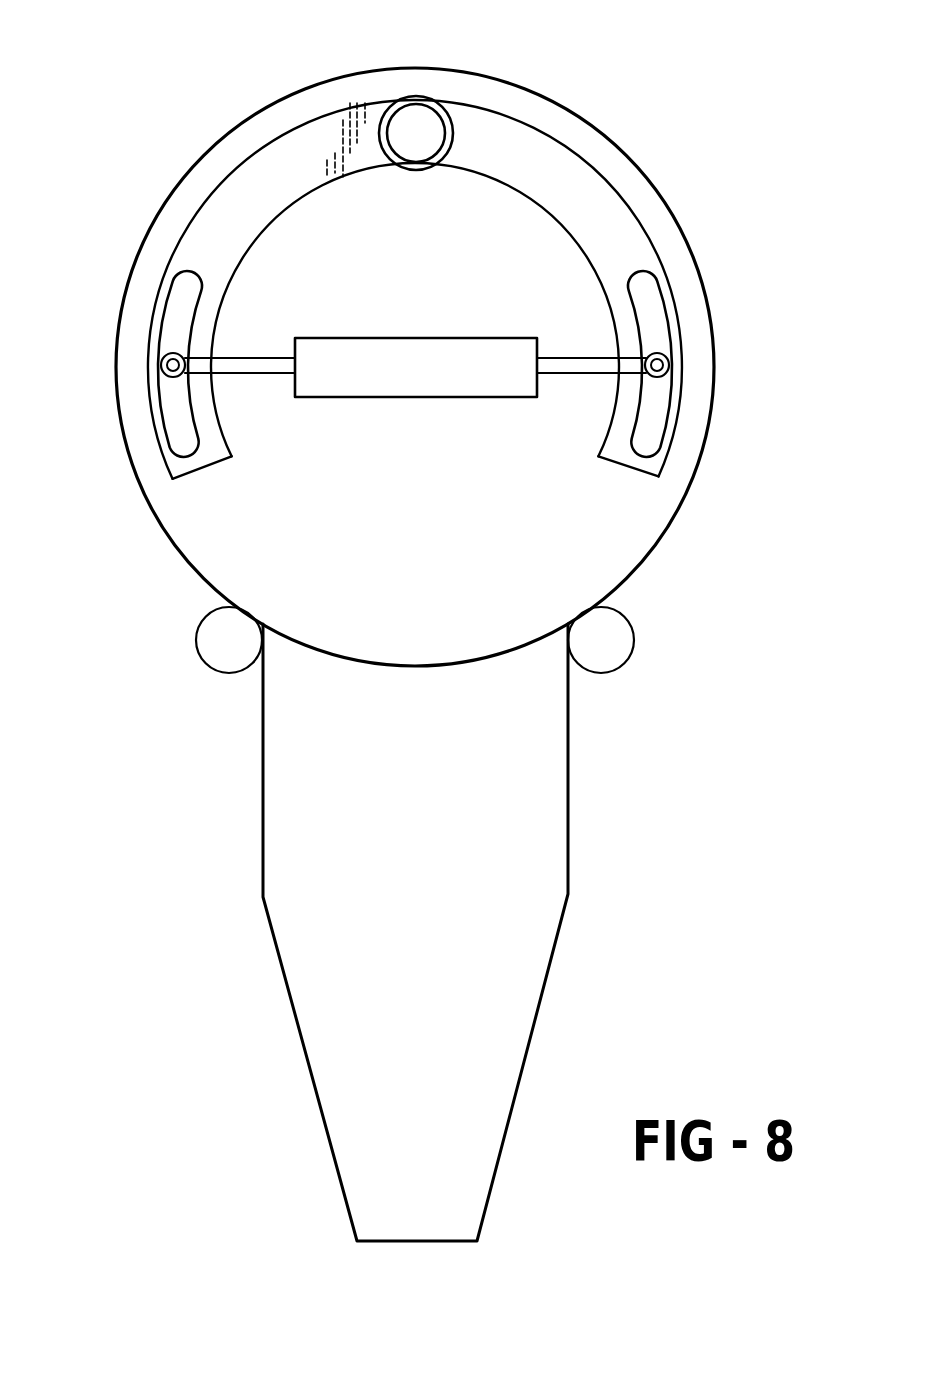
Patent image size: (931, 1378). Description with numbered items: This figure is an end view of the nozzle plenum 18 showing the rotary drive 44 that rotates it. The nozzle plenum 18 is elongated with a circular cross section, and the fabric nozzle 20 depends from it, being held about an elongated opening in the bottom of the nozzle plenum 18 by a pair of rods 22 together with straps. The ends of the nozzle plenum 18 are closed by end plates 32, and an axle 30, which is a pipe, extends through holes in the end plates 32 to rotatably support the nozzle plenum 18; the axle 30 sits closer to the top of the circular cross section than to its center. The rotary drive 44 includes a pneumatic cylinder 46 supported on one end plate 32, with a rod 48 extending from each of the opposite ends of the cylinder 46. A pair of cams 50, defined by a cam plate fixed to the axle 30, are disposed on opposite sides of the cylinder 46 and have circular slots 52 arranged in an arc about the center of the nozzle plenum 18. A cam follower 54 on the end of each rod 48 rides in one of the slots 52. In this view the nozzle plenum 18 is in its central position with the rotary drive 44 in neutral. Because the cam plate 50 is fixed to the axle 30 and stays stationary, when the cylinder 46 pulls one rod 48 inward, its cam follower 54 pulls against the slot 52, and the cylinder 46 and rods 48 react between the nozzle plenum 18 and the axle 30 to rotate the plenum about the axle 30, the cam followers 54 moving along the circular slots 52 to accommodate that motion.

The nozzle plenum 18 is at (673, 522).
The nozzle 20 is at (570, 877).
The rods 22 is at (226, 676).
The axle 30 is at (443, 115).
The end plates 32 is at (225, 532).
The rotary drive 44 is at (393, 397).
The cylinder 46 is at (475, 390).
The rods 48 is at (246, 366).
The cams 50 is at (235, 187).
The circular slots 52 is at (160, 440).
The cam follower 54 is at (162, 357).